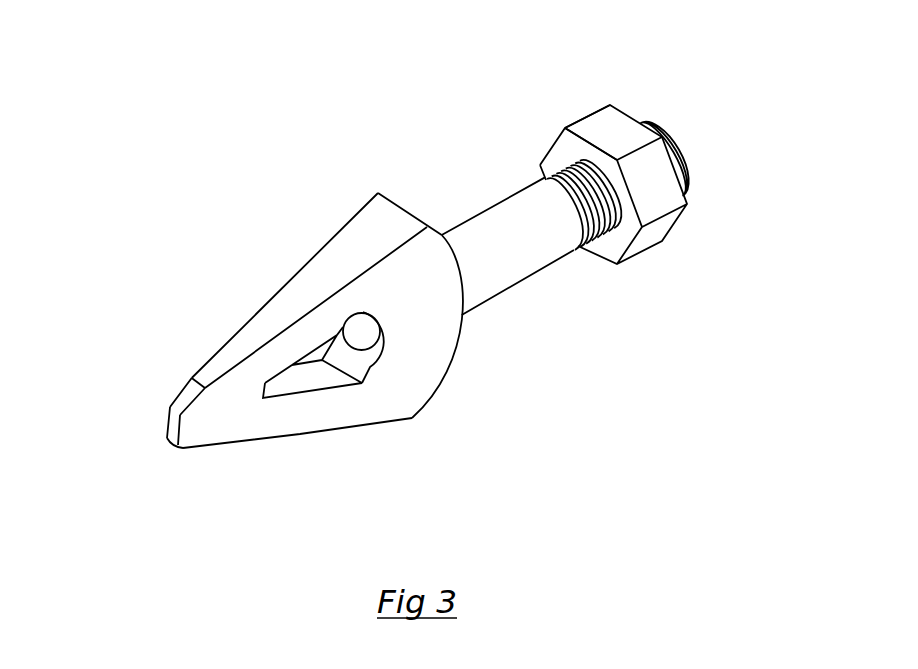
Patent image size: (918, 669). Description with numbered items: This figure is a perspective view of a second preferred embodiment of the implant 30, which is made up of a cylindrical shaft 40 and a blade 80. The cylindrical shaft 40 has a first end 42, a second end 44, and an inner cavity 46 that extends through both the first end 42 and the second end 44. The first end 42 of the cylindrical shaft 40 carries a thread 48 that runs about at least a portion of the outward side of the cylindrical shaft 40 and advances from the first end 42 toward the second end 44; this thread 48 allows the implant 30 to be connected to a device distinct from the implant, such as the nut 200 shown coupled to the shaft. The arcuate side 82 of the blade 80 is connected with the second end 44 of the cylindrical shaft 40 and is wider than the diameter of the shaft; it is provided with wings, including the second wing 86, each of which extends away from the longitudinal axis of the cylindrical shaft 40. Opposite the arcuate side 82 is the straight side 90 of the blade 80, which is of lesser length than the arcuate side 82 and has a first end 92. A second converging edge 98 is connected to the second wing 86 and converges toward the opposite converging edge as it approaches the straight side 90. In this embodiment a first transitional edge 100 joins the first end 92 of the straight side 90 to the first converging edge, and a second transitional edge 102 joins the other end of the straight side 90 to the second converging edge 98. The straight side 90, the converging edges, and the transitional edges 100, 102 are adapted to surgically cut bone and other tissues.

The implant 30 is at (253, 217).
The cylindrical shaft 40 is at (495, 203).
The first end 42 is at (677, 132).
The second end 44 is at (378, 352).
The inner cavity 46 is at (358, 328).
The thread 48 is at (618, 233).
The blade 80 is at (253, 317).
The arcuate side 82 is at (470, 378).
The second wing 86 is at (410, 192).
The straight side 90 is at (167, 417).
The first end 92 is at (192, 377).
The second converging edge 98 is at (295, 430).
The first transitional edge 100 is at (200, 392).
The second transitional edge 102 is at (195, 438).
The nut 200 is at (593, 110).